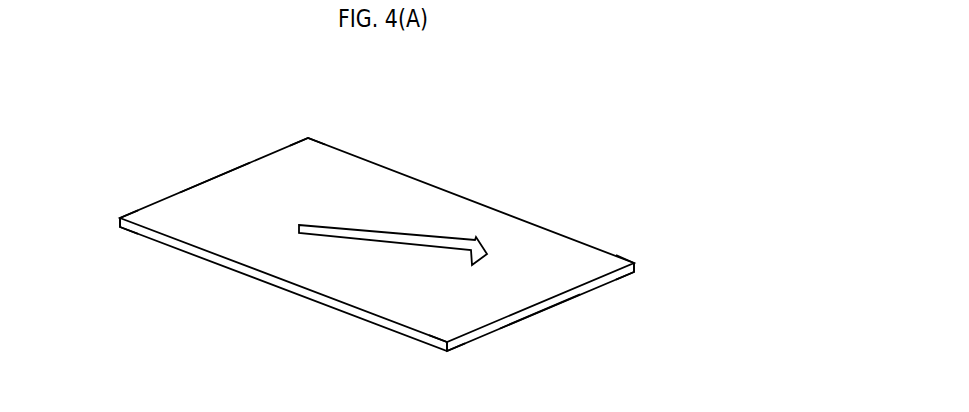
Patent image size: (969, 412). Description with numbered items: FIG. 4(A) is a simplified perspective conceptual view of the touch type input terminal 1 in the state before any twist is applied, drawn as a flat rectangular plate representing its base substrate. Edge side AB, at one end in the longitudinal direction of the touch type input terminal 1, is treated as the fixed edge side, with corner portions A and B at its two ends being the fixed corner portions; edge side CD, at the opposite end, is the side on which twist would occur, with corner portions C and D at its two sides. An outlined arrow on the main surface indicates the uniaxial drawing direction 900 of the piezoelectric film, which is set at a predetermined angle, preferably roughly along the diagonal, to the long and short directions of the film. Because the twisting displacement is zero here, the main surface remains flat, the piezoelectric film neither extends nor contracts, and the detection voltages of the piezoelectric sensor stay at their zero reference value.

The touch type input terminal 1 is at (550, 220).
The uniaxial drawing direction 900 is at (405, 236).
The corner portion A is at (307, 126).
The corner portion B is at (118, 207).
The corner portion C is at (456, 360).
The corner portion D is at (646, 278).
The edge side AB is at (214, 165).
The edge side CD is at (541, 324).